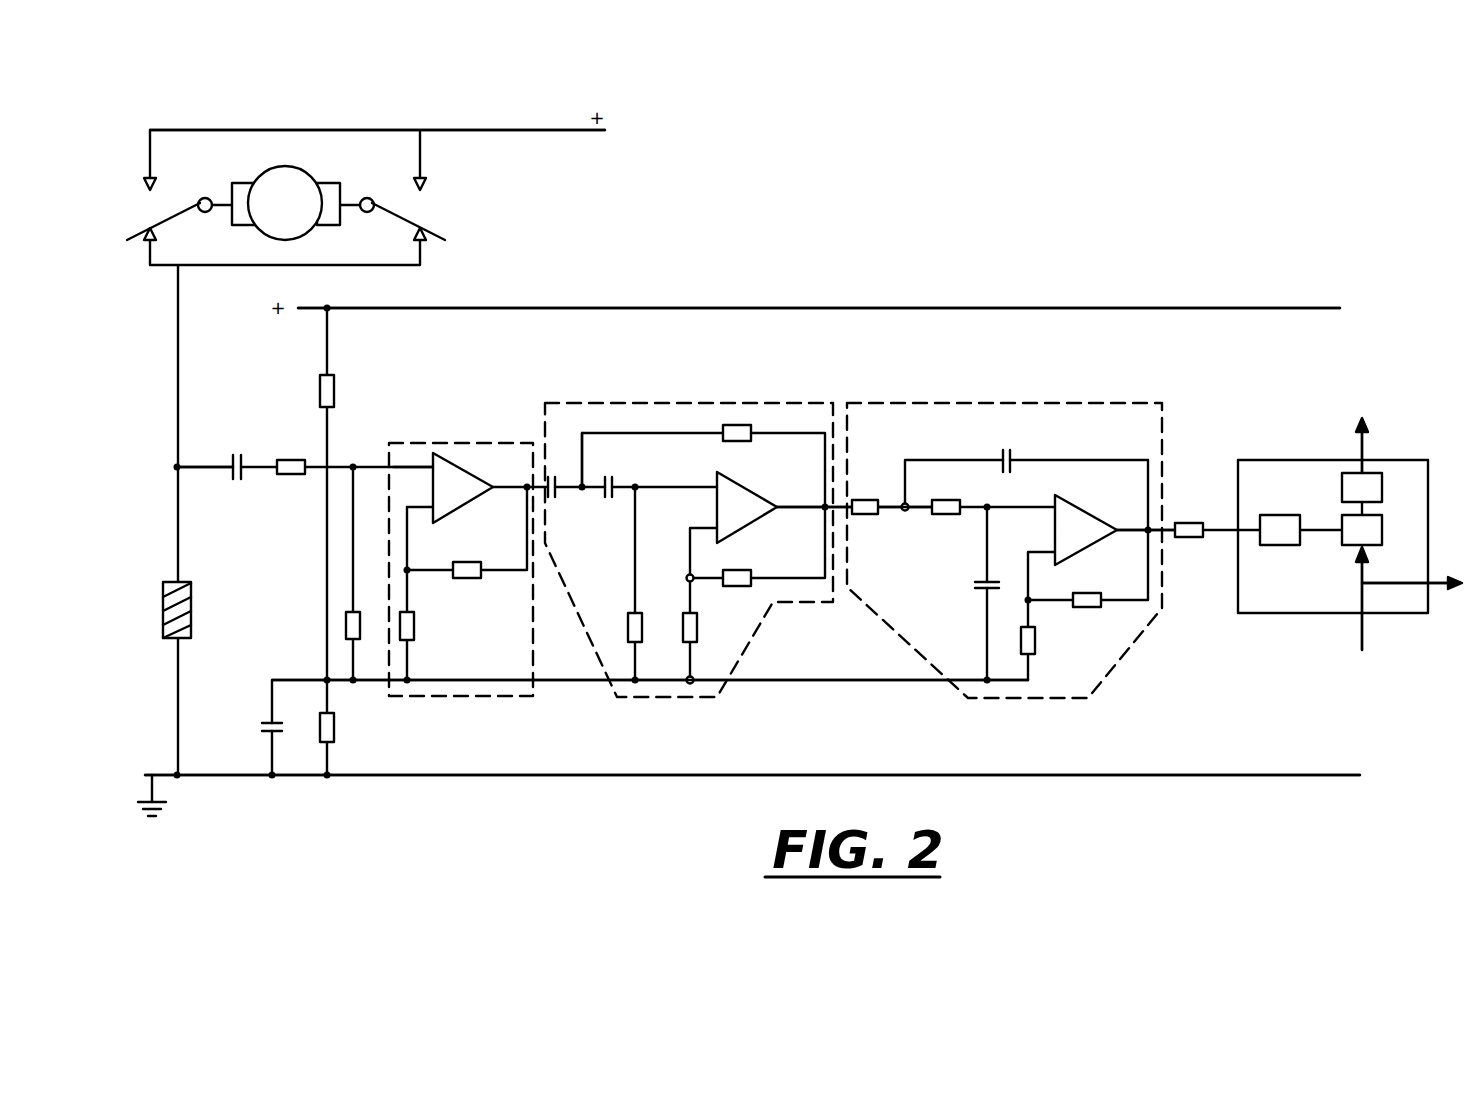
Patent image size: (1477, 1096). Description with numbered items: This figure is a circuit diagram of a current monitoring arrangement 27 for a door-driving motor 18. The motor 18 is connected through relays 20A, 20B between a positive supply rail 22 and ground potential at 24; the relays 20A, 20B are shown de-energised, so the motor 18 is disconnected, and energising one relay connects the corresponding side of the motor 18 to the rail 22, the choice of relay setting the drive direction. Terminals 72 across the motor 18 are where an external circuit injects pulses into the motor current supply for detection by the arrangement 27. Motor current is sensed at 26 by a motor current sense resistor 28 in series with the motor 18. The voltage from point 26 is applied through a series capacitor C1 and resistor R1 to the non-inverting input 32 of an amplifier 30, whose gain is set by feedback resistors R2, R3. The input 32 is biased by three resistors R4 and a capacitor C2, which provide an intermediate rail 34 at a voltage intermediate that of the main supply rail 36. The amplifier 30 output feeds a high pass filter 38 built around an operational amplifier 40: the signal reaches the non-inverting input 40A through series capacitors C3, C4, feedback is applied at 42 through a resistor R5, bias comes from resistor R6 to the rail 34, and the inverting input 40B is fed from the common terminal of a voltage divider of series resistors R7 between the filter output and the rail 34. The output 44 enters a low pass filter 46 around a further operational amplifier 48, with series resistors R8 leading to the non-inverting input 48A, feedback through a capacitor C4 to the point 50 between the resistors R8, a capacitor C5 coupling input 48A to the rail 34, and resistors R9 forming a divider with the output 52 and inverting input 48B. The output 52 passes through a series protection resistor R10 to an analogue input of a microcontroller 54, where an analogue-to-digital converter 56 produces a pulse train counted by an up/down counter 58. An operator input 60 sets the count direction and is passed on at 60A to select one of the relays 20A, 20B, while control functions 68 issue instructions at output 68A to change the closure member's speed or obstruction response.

The positive supply rail 22 is at (515, 130).
The relay 20A is at (143, 201).
The relay 20B is at (450, 206).
The terminals 72 is at (205, 198).
The motor 18 is at (295, 190).
The current monitoring arrangement 27 is at (672, 336).
The main supply rail 36 is at (835, 308).
The motor current sense point 26 is at (177, 467).
The motor current sense resistor 28 is at (163, 605).
The ground potential 24 is at (165, 778).
The series capacitor C1 is at (242, 452).
The resistor R1 is at (293, 451).
The bias resistors R4 is at (354, 558).
The capacitor C2 is at (256, 728).
The amplifier 30 is at (452, 443).
The non-inverting input 32 is at (393, 467).
The feedback resistor R2 is at (468, 555).
The feedback resistor R3 is at (423, 626).
The intermediate rail 34 is at (570, 682).
The high pass filter 38 is at (612, 403).
The feedback point 42 is at (583, 452).
The series capacitor C3 is at (559, 501).
The capacitor C4 is at (807, 473).
The operational amplifier 40 is at (745, 512).
The non-inverting input 40A is at (707, 487).
The inverting input 40B is at (705, 528).
The output of the high pass filter 44 is at (825, 507).
The feedback resistor R5 is at (736, 445).
The bias resistor R6 is at (620, 627).
The voltage divider resistors R7 is at (718, 606).
The low pass filter 46 is at (945, 403).
The point between resistors R8 50 is at (905, 497).
The series resistors R8 is at (907, 523).
The capacitor C5 is at (971, 585).
The operational amplifier 48 is at (1085, 535).
The non-inverting input 48A is at (1047, 507).
The inverting input 48B is at (1050, 551).
The output of the low pass filter 52 is at (1148, 530).
The voltage divider resistors R9 is at (1063, 623).
The series protection resistor R10 is at (1191, 544).
The microcontroller 54 is at (1265, 600).
The analogue-to-digital converter 56 is at (1282, 535).
The up/down counter 58 is at (1383, 530).
The control functions 68 is at (1372, 495).
The output 68A is at (1362, 455).
The input 60 is at (1365, 633).
The direction output 60A is at (1430, 583).